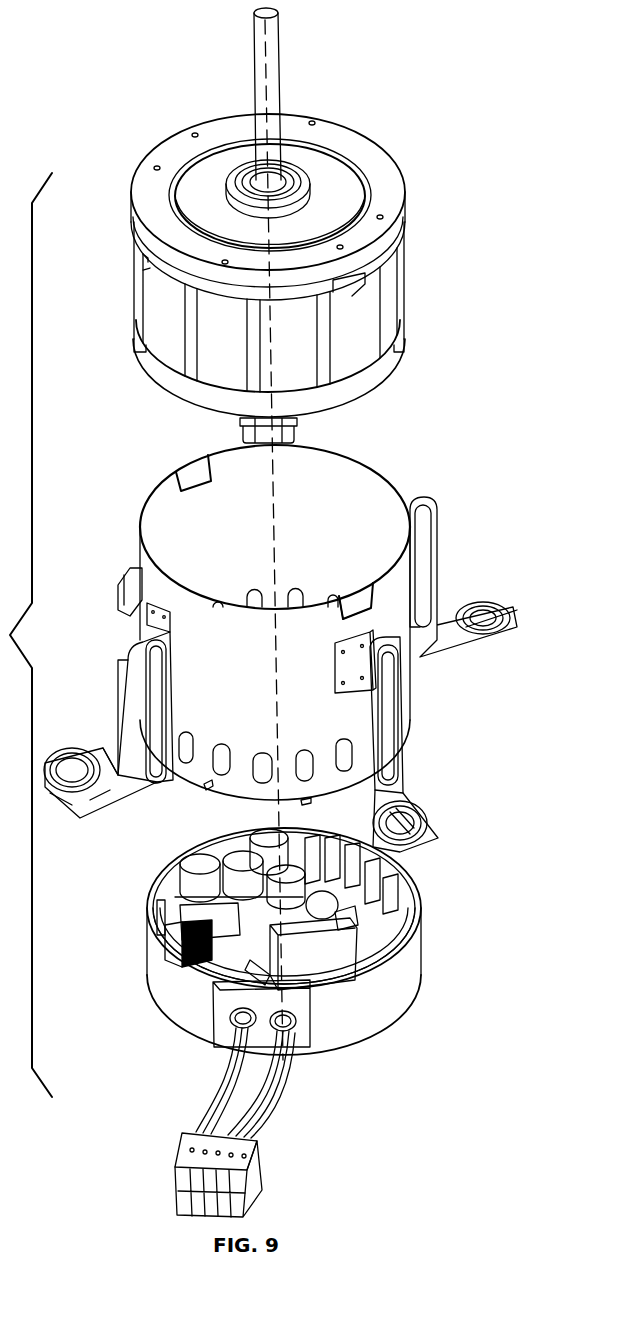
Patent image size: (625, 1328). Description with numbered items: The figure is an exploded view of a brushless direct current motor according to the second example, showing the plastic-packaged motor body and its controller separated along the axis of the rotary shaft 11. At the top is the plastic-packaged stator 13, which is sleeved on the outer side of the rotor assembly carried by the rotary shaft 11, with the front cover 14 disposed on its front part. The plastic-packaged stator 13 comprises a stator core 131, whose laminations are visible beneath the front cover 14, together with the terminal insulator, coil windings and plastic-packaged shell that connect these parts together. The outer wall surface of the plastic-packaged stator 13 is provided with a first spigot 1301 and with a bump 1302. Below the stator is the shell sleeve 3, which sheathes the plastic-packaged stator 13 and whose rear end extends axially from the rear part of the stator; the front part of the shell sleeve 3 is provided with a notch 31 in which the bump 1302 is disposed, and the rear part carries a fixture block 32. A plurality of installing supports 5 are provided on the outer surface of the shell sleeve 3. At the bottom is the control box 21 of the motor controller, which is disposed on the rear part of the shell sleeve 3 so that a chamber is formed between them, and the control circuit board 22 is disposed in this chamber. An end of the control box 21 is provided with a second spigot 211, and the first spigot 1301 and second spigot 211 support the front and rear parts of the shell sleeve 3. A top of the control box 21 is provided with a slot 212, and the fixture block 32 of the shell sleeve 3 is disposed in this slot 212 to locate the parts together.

The rotary shaft 11 is at (273, 70).
The plastic-packaged stator 13 is at (273, 260).
The front cover 14 is at (237, 173).
The stator core 131 is at (167, 327).
The first spigot 1301 is at (150, 281).
The bump 1302 is at (353, 288).
The shell sleeve 3 is at (280, 659).
The notch 31 is at (360, 597).
The fixture block 32 is at (207, 785).
The installing support 5 is at (137, 713).
The control box 21 is at (285, 944).
The second spigot 211 is at (148, 937).
The slot 212 is at (208, 992).
The control circuit board 22 is at (285, 909).